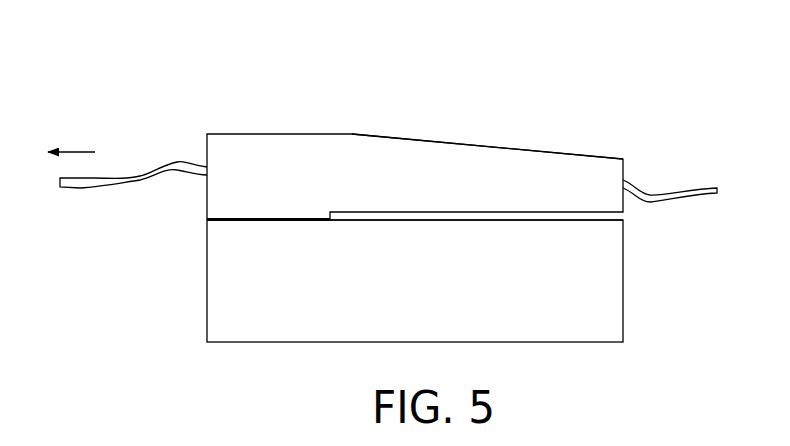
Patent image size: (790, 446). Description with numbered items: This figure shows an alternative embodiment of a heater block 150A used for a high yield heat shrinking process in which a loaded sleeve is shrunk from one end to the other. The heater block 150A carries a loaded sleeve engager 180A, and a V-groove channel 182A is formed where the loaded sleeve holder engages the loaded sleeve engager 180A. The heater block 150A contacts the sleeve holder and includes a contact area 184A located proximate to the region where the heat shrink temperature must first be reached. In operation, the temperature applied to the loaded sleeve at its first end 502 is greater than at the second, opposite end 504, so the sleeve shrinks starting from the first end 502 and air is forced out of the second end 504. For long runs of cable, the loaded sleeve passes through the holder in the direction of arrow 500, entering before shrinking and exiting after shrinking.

The arrow 500 is at (80, 138).
The first end 502 is at (189, 131).
The second end 504 is at (635, 199).
The heater block 150A is at (207, 333).
The loaded sleeve engager 180A is at (575, 155).
The V-groove channel 182A is at (436, 124).
The contact area 184A is at (174, 231).